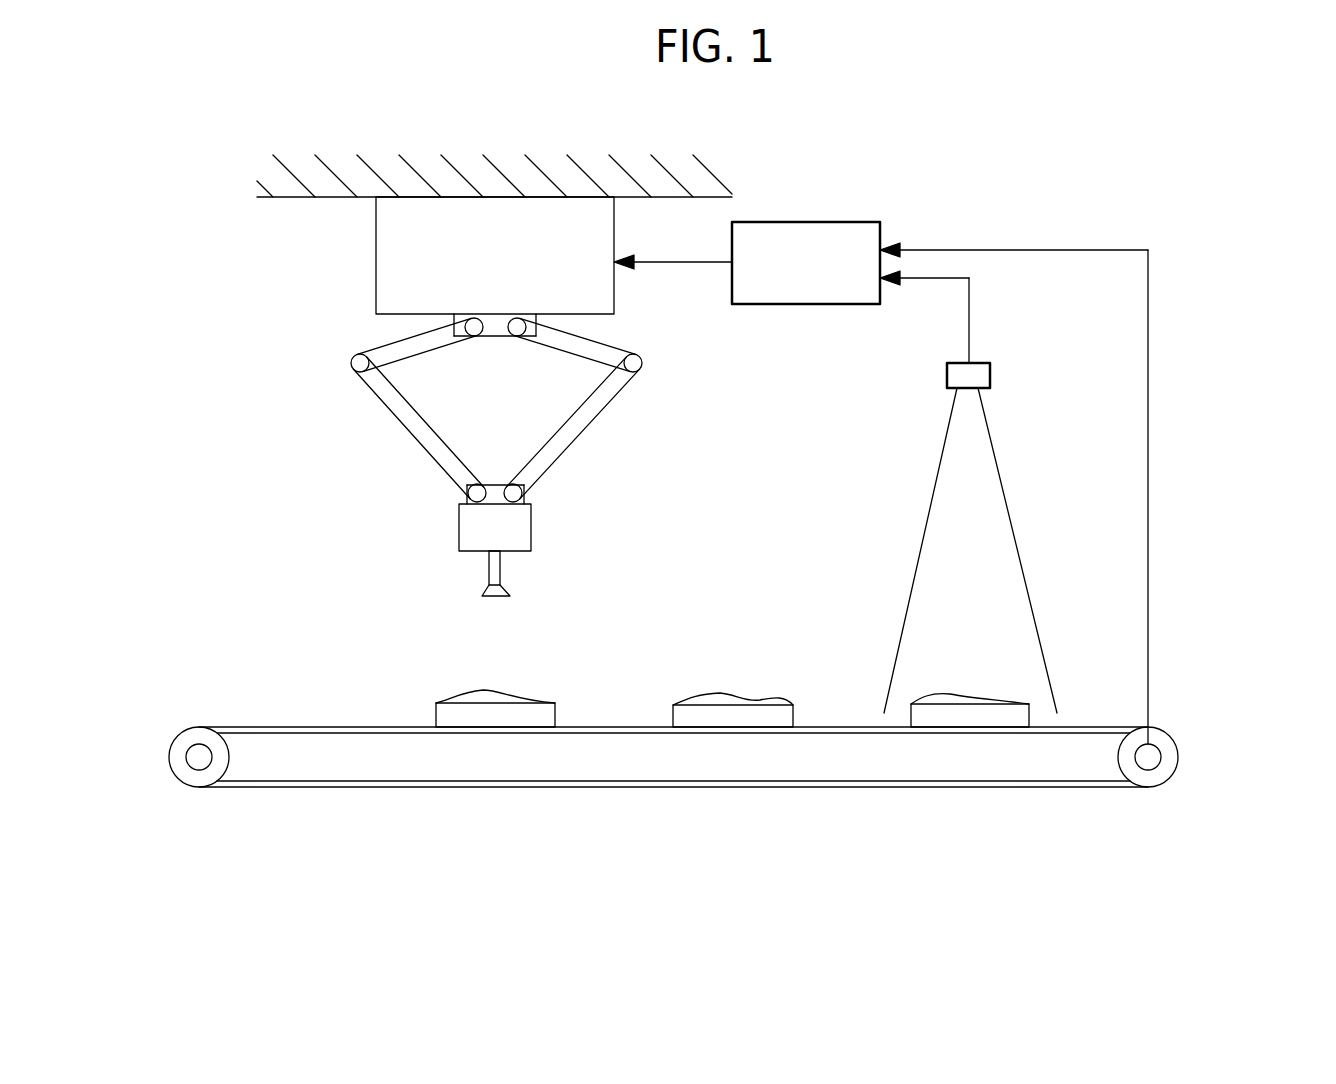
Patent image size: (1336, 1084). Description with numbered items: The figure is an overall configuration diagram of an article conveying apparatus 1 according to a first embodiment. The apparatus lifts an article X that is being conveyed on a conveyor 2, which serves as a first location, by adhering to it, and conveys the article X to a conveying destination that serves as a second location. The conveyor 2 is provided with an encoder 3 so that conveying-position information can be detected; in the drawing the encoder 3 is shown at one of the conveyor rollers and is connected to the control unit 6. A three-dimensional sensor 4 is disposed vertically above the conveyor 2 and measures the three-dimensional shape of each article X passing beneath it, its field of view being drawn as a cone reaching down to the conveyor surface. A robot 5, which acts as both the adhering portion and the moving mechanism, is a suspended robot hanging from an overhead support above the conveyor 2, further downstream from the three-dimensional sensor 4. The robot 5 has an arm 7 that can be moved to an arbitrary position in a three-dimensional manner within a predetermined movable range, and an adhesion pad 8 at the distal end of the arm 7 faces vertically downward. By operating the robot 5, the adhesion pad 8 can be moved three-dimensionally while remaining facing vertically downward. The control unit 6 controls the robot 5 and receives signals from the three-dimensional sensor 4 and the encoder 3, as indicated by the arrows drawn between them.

The article conveying apparatus 1 is at (967, 172).
The conveyor 2 is at (305, 787).
The encoder 3 is at (1161, 757).
The three-dimensional sensor 4 is at (992, 375).
The robot 5 is at (348, 302).
The control unit 6 is at (798, 222).
The arm 7 is at (403, 425).
The adhesion pad 8 is at (495, 598).
The article X is at (533, 698).